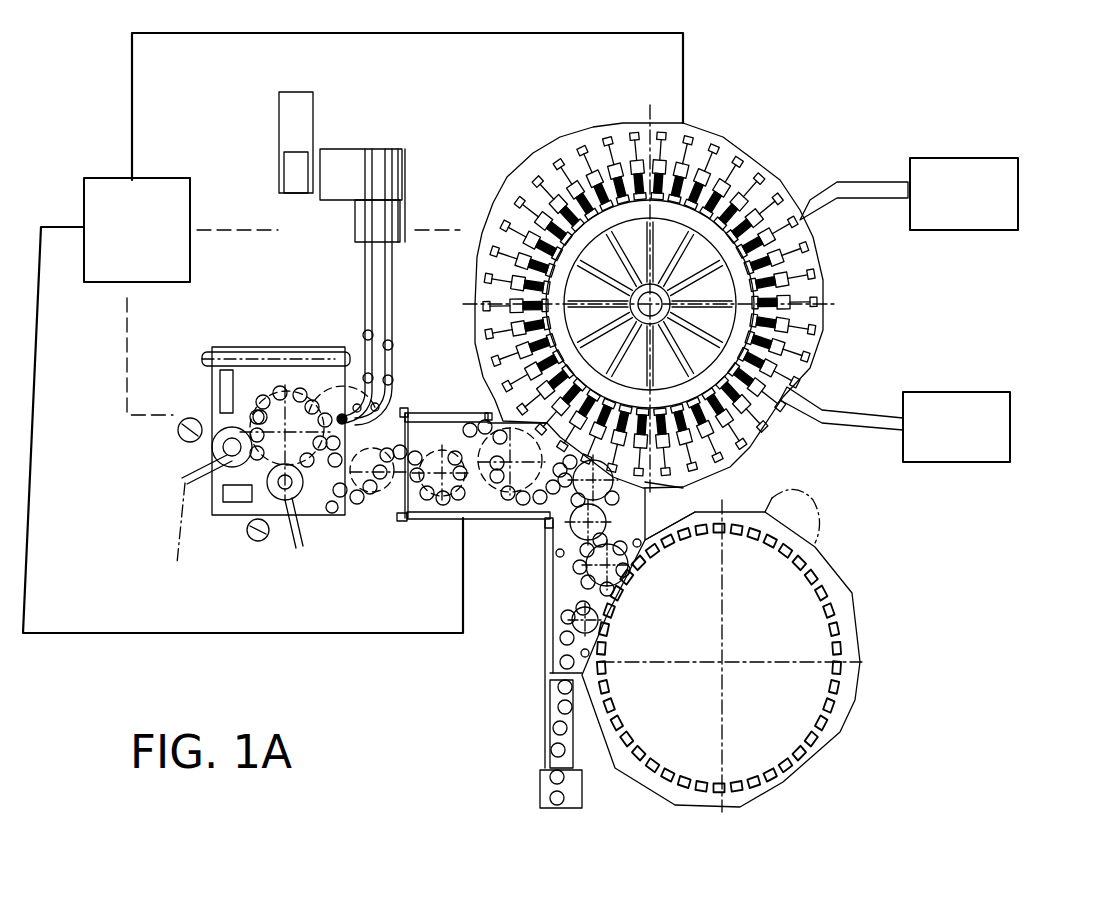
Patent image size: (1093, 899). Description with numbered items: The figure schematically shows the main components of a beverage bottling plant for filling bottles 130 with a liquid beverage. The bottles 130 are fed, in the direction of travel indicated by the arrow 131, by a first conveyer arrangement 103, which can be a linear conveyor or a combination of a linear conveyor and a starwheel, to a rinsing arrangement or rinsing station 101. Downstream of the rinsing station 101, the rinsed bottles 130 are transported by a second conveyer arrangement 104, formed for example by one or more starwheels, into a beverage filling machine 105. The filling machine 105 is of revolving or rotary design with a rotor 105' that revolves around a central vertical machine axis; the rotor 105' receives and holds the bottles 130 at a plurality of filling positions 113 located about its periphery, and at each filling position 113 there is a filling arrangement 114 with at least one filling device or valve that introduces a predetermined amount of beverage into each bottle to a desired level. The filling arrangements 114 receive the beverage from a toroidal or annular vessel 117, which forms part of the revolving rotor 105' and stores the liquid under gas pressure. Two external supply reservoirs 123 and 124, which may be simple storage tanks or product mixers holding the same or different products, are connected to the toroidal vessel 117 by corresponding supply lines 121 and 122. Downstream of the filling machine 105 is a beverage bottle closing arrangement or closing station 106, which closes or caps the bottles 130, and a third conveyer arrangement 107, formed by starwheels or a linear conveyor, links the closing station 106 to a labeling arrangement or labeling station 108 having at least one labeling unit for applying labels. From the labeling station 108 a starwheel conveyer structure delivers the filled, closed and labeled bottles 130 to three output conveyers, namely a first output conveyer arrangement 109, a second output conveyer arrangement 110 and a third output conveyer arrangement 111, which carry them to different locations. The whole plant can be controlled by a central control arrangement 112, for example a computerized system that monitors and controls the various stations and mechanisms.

The rinsing arrangement 101 is at (771, 650).
The first conveyer arrangement 103 is at (575, 735).
The second conveyer arrangement 104 is at (557, 583).
The beverage filling machine 105 is at (706, 315).
The rotor 105' is at (649, 289).
The closing station 106 is at (482, 468).
The third conveyer arrangement 107 is at (409, 535).
The labeling station 108 is at (237, 556).
The first output conveyer arrangement 109 is at (392, 332).
The second output conveyer arrangement 110 is at (362, 275).
The third output conveyer arrangement 111 is at (253, 348).
The central control arrangement 112 is at (152, 249).
The filling positions 113 is at (820, 242).
The filling arrangement 114 is at (815, 335).
The toroidal vessel 117 is at (758, 453).
The supply line 121 is at (860, 180).
The supply line 122 is at (857, 410).
The external supply reservoir 123 is at (1007, 203).
The external supply reservoir 124 is at (1010, 435).
The bottles 130 is at (563, 752).
The arrow 131 is at (525, 730).